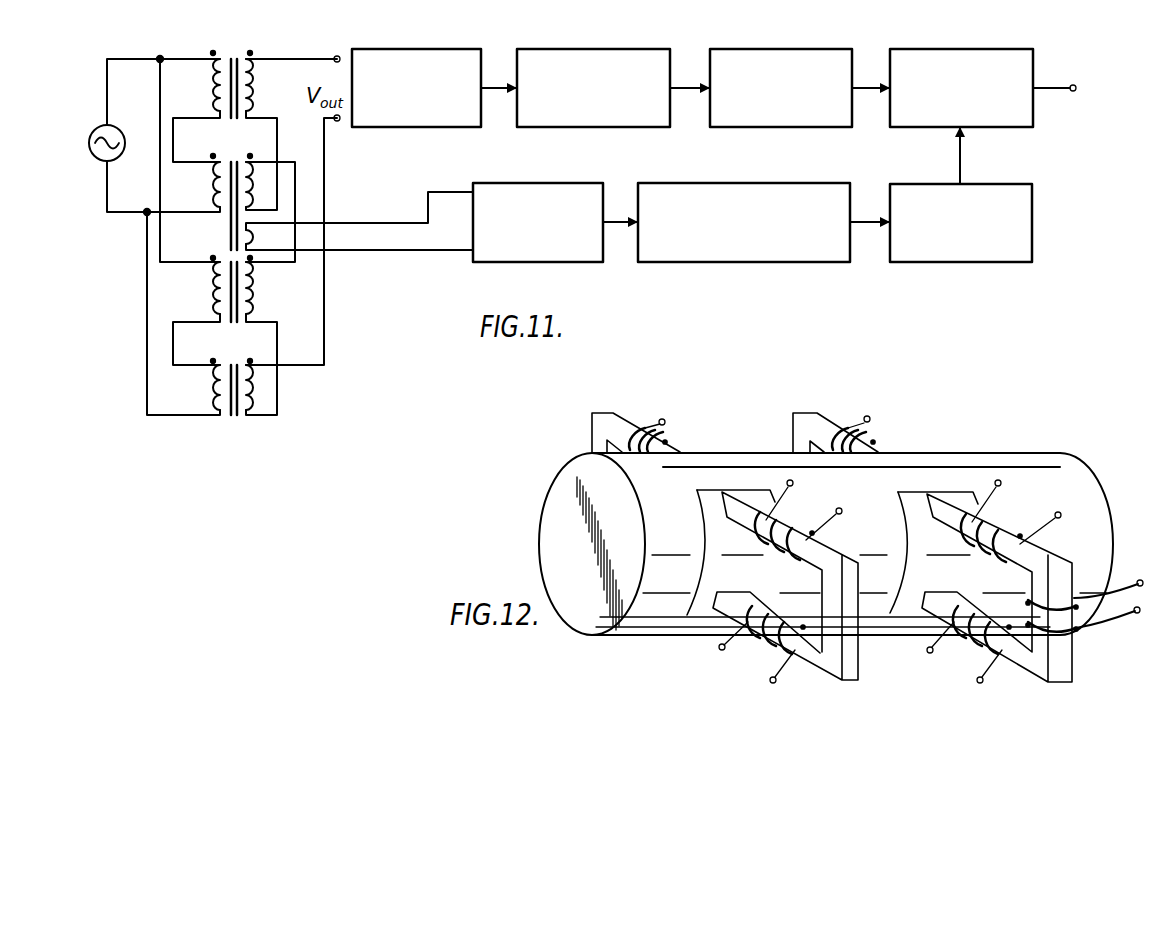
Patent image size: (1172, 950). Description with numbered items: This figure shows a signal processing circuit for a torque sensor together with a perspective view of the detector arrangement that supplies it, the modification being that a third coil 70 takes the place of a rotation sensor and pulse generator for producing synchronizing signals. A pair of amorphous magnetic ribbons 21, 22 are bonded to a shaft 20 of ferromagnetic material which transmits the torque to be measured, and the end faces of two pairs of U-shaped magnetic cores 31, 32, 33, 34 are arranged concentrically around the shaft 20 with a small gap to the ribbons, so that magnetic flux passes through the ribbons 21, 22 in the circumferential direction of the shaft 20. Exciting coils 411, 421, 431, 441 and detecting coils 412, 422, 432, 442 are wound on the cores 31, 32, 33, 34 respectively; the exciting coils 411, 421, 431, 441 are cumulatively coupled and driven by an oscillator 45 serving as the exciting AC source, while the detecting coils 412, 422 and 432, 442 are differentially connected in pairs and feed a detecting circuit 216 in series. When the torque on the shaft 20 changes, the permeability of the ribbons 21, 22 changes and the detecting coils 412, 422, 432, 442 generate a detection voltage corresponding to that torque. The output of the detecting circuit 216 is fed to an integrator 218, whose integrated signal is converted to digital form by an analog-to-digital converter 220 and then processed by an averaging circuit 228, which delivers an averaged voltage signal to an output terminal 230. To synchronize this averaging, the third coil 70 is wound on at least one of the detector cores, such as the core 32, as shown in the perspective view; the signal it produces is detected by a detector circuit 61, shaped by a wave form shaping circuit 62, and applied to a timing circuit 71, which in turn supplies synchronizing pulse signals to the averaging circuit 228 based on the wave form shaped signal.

In FIG. 12, the shaft 20 is at (1035, 467).
In FIG. 12, the amorphous magnetic ribbon 21 is at (712, 490).
In FIG. 12, the amorphous magnetic ribbon 22 is at (910, 490).
In FIG. 11, the U-shaped magnetic core 31 is at (232, 54).
In FIG. 12, the U-shaped magnetic core 31 is at (799, 553).
In FIG. 11, the U-shaped magnetic core 32 is at (232, 155).
In FIG. 12, the U-shaped magnetic core 32 is at (1022, 553).
In FIG. 11, the U-shaped magnetic core 33 is at (232, 325).
In FIG. 12, the U-shaped magnetic core 33 is at (626, 418).
In FIG. 11, the U-shaped magnetic core 34 is at (232, 420).
In FIG. 12, the U-shaped magnetic core 34 is at (792, 413).
In FIG. 11, the oscillator 45 is at (90, 148).
In FIG. 11, the detector circuit 61 is at (565, 262).
In FIG. 11, the wave form shaping circuit 62 is at (818, 262).
In FIG. 11, the third coil 70 is at (252, 236).
In FIG. 12, the third coil 70 is at (1108, 626).
In FIG. 11, the timing circuit 71 is at (992, 262).
In FIG. 11, the detecting circuit 216 is at (430, 127).
In FIG. 11, the integrator 218 is at (618, 127).
In FIG. 11, the analog-to-digital converter 220 is at (803, 127).
In FIG. 11, the averaging circuit 228 is at (990, 127).
In FIG. 11, the output terminal 230 is at (1074, 84).
In FIG. 11, the exciting coil 411 is at (212, 90).
In FIG. 12, the exciting coil 411 is at (800, 532).
In FIG. 11, the detecting coil 412 is at (254, 90).
In FIG. 12, the detecting coil 412 is at (778, 632).
In FIG. 11, the exciting coil 421 is at (212, 190).
In FIG. 12, the exciting coil 421 is at (1012, 532).
In FIG. 11, the detecting coil 422 is at (254, 191).
In FIG. 12, the detecting coil 422 is at (992, 637).
In FIG. 11, the exciting coil 431 is at (212, 292).
In FIG. 11, the detecting coil 432 is at (254, 292).
In FIG. 11, the exciting coil 441 is at (212, 395).
In FIG. 11, the detecting coil 442 is at (254, 395).